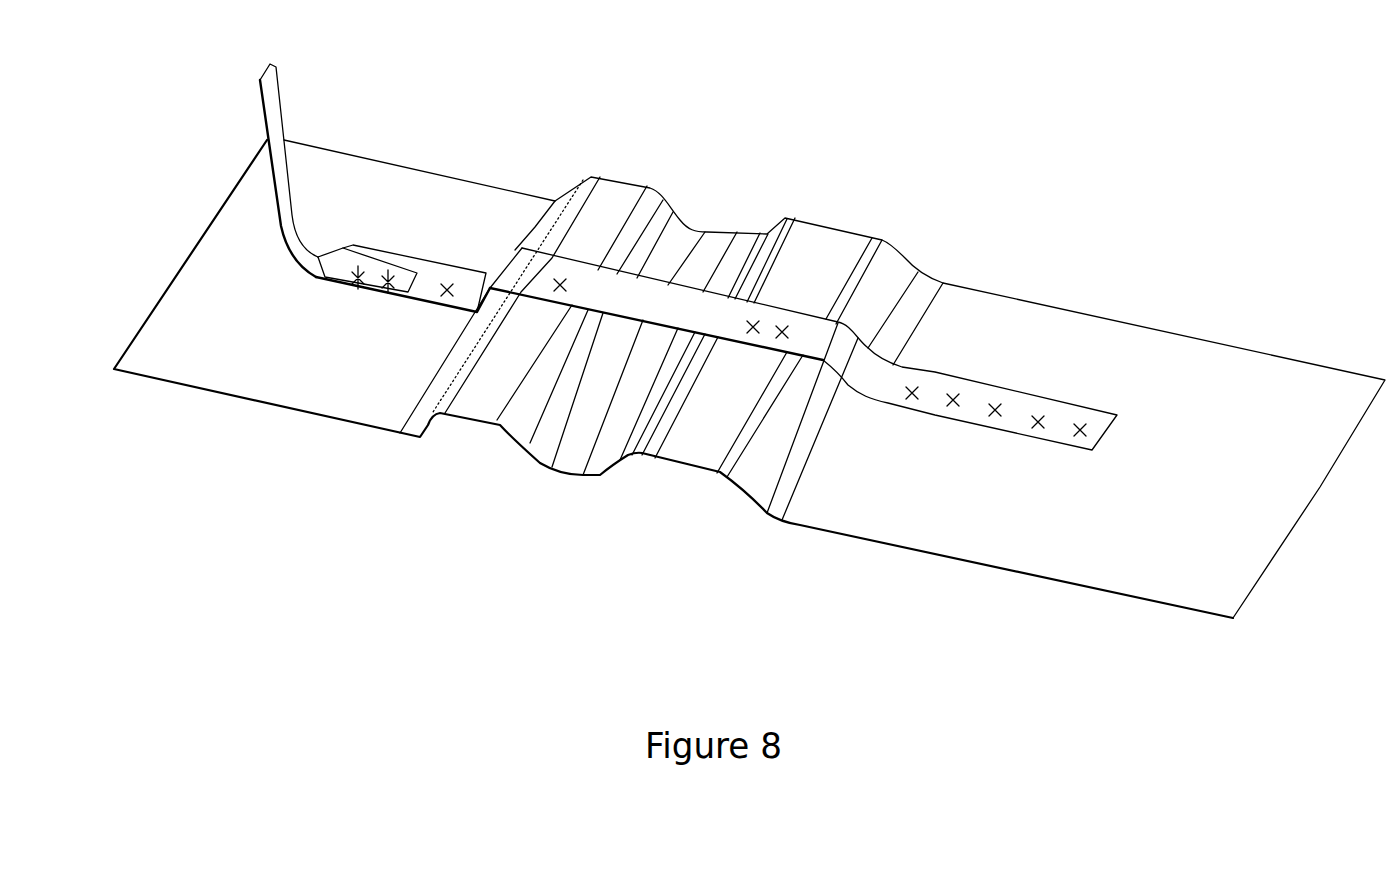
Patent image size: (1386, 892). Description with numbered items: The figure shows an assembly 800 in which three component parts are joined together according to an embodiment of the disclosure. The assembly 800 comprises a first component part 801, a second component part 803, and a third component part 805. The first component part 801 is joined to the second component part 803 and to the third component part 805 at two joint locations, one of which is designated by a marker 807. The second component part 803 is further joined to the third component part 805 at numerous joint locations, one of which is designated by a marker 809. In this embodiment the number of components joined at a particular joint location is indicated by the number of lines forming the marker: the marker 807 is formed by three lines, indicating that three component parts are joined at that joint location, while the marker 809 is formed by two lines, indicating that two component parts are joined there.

The assembly 800 is at (829, 150).
The first component part 801 is at (267, 107).
The second component part 803 is at (627, 293).
The third component part 805 is at (1015, 318).
The marker 807 is at (388, 272).
The marker 809 is at (748, 310).